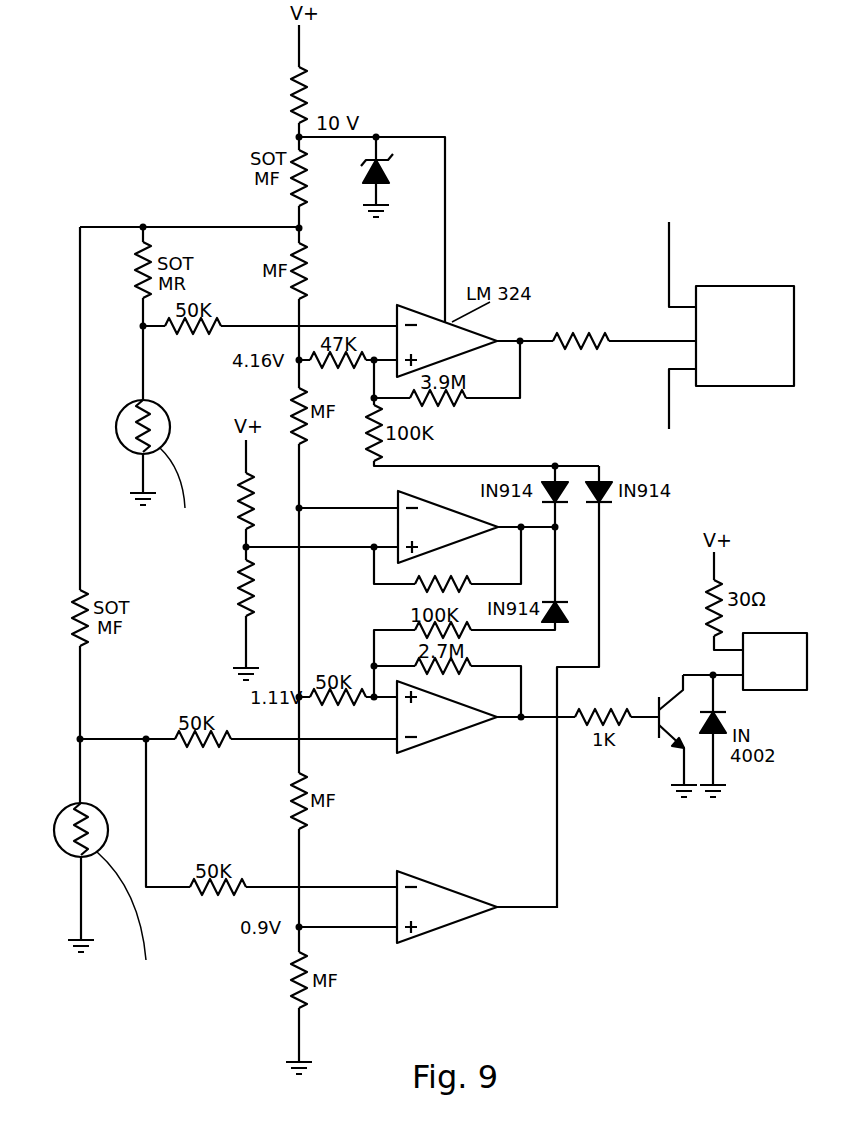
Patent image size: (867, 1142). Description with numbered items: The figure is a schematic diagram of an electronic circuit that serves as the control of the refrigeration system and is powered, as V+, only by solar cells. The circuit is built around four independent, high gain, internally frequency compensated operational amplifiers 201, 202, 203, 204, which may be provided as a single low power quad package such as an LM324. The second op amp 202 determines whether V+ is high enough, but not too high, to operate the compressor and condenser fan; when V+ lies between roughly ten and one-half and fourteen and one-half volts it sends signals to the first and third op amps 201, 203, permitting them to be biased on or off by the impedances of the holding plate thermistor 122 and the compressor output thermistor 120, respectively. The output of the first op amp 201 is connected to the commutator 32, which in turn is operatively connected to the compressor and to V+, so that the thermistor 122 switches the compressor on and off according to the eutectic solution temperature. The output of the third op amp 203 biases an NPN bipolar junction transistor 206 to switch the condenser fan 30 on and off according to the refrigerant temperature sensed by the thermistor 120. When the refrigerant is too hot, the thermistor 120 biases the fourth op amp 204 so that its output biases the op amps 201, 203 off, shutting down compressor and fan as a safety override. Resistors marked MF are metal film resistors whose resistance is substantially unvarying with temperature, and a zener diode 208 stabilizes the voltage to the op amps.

The zener diode 208 is at (388, 172).
The holding plate thermistor 122 is at (158, 405).
The compressor output thermistor 120 is at (100, 812).
The first operational amplifier 201 is at (447, 341).
The second operational amplifier 202 is at (448, 527).
The third operational amplifier 203 is at (447, 717).
The fourth operational amplifier 204 is at (447, 907).
The commutator 32 is at (726, 335).
The condenser fan 30 is at (770, 690).
The NPN bipolar junction transistor 206 is at (660, 728).